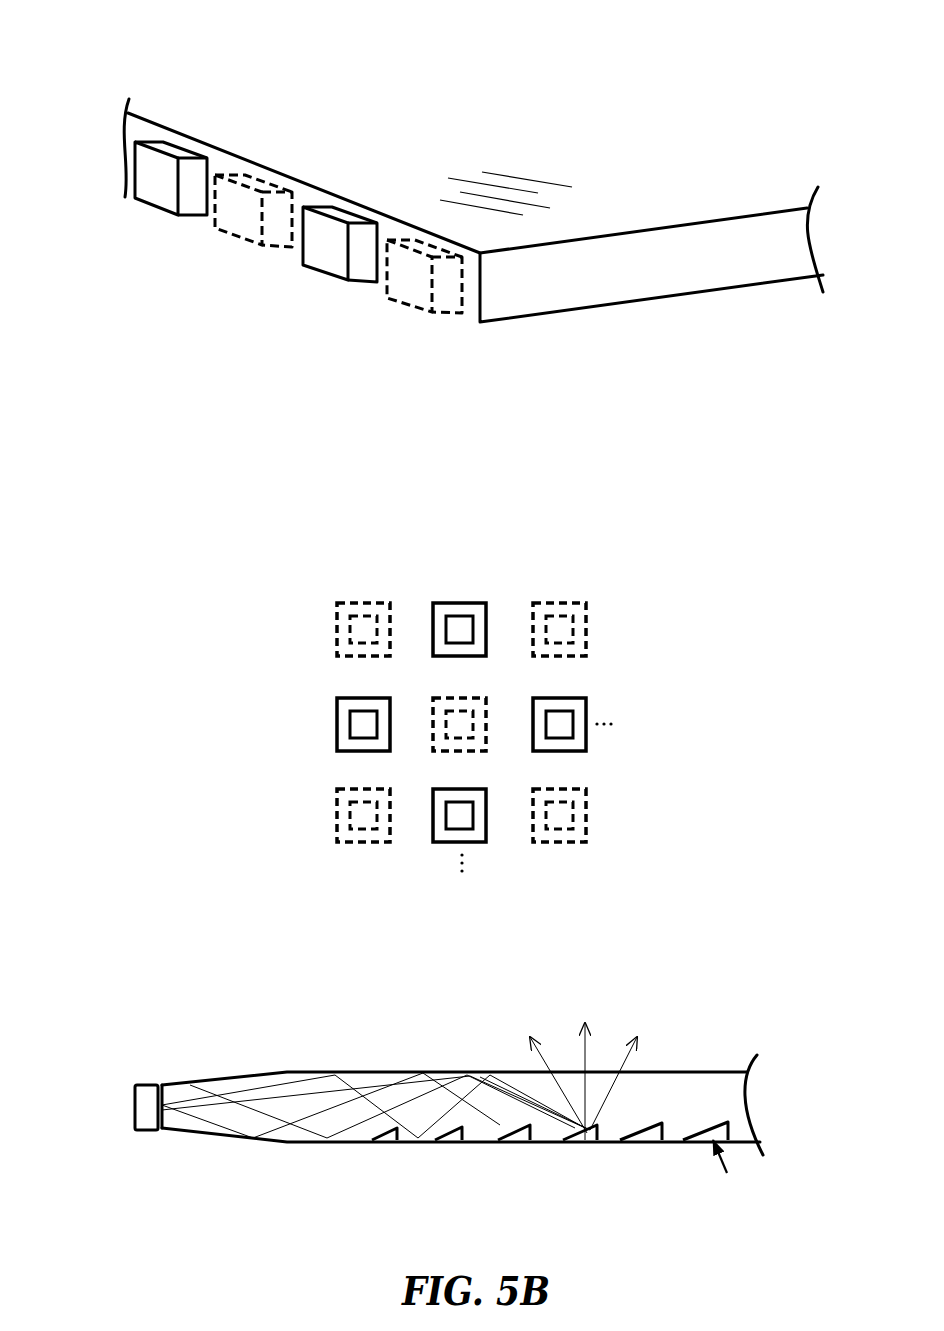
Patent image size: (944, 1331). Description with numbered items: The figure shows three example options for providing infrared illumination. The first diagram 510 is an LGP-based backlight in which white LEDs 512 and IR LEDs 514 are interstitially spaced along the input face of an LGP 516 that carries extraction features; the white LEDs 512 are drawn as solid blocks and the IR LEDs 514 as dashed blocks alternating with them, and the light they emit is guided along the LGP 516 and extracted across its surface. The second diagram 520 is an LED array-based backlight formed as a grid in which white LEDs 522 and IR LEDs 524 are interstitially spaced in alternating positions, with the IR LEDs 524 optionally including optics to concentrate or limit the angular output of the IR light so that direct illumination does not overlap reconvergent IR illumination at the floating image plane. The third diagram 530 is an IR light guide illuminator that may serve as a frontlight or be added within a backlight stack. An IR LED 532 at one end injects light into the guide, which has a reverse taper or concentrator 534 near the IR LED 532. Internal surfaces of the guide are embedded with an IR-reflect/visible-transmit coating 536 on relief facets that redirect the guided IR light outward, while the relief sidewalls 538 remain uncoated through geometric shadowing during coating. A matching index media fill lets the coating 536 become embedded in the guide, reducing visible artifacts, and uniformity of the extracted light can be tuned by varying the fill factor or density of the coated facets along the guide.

The LGP-based backlight diagram 510 is at (172, 65).
The white LEDs 512 is at (308, 270).
The IR LEDs 514 is at (395, 303).
The LGP 516 is at (615, 288).
The LED array-based backlight diagram 520 is at (180, 545).
The white LEDs 522 is at (457, 632).
The IR LEDs 524 is at (467, 722).
The IR light guide illuminator diagram 530 is at (180, 943).
The IR LED 532 is at (137, 1073).
The reverse taper or concentrator 534 is at (228, 1068).
The IR-reflect/visible-transmit coating 536 is at (612, 1137).
The relief sidewalls 538 is at (733, 1130).